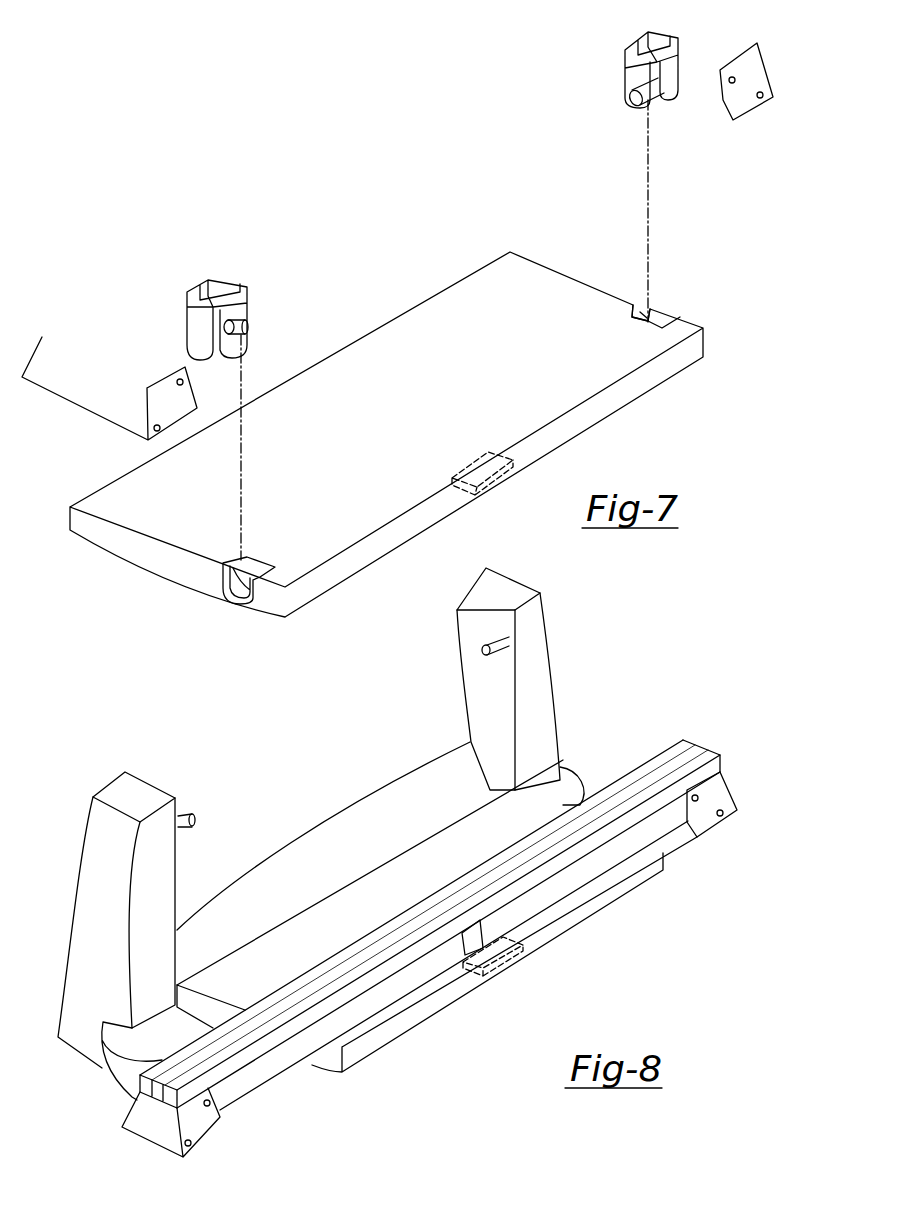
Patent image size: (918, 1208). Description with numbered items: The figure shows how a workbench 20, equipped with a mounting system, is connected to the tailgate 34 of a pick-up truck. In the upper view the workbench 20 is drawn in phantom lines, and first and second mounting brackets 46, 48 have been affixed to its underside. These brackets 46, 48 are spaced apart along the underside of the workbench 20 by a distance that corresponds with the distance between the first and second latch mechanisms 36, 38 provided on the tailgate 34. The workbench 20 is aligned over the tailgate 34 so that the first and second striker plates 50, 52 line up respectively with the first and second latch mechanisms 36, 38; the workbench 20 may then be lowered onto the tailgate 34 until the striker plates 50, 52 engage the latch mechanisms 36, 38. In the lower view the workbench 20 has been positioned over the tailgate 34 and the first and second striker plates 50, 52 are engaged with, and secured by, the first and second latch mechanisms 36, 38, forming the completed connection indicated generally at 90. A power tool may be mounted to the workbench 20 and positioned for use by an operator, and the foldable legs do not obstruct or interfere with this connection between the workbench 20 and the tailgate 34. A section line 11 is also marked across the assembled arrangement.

In FIG. 7, the workbench 20 is at (450, 97).
In FIG. 8, the workbench 20 is at (297, 998).
In FIG. 7, the tailgate 34 is at (478, 408).
In FIG. 8, the tailgate 34 is at (450, 874).
In FIG. 7, the first latch mechanism 36 is at (243, 592).
In FIG. 7, the second latch mechanism 38 is at (647, 322).
In FIG. 7, the first mounting bracket 46 is at (200, 350).
In FIG. 7, the second mounting bracket 48 is at (680, 72).
In FIG. 7, the first striker plate 50 is at (243, 318).
In FIG. 7, the second striker plate 52 is at (636, 101).
In FIG. 8, the slide assembly 90 is at (697, 738).
In FIG. 8, the section line 11- 11 is at (268, 943).